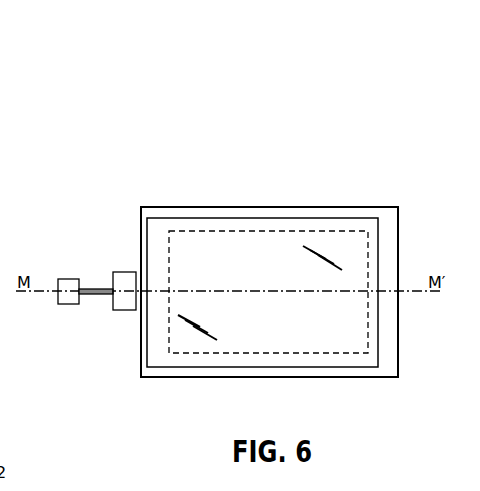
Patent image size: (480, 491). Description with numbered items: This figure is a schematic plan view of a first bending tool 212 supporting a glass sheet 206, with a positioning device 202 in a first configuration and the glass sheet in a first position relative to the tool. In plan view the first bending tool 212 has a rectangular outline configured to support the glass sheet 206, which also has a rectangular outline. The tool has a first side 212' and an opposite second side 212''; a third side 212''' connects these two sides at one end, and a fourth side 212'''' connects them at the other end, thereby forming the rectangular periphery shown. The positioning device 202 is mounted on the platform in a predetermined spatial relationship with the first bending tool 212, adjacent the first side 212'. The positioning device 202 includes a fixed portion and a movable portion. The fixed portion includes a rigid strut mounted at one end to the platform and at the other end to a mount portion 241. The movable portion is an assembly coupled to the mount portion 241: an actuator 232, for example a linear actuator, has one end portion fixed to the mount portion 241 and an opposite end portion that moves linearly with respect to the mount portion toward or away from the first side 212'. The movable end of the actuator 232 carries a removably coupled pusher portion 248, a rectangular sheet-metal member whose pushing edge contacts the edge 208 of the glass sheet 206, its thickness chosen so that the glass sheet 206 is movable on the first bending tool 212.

The positioning device 202 is at (62, 166).
The glass sheet 206 is at (313, 343).
The edge of the glass sheet 208 is at (140, 246).
The first bending tool 212 is at (299, 272).
The first side 212' is at (109, 364).
The second side 212'' is at (429, 265).
The third side 212''' is at (228, 404).
The fourth side 212'''' is at (290, 174).
The actuator 232 is at (98, 289).
The mount portion 241 is at (65, 279).
The pusher portion 248 is at (122, 306).